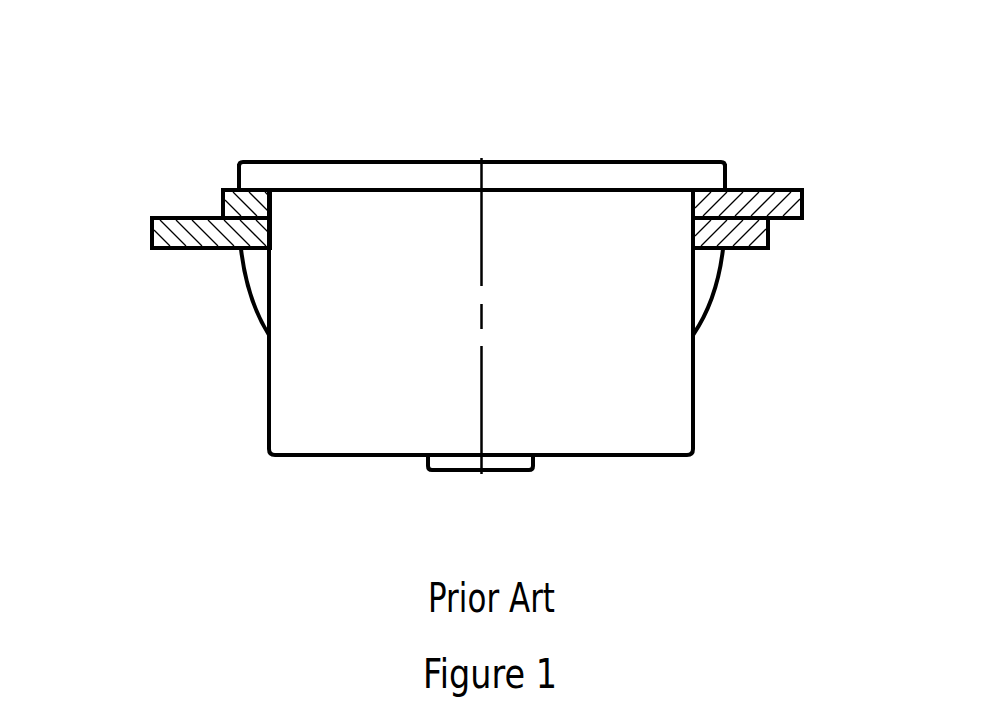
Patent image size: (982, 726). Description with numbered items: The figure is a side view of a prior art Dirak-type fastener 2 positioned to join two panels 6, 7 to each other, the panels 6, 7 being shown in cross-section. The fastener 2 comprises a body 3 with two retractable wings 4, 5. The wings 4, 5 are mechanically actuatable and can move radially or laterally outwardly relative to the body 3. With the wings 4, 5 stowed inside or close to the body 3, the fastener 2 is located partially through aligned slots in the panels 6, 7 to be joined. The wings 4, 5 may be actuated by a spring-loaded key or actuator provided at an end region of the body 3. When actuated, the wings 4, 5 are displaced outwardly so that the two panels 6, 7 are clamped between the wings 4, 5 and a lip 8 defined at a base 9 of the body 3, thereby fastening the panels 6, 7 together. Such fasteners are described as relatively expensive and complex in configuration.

The fastener 2 is at (212, 97).
The body 3 is at (240, 390).
The wing 4 is at (250, 283).
The wing 5 is at (720, 312).
The panel 6 is at (212, 200).
The panel 7 is at (147, 242).
The lip 8 is at (238, 177).
The base 9 is at (517, 153).